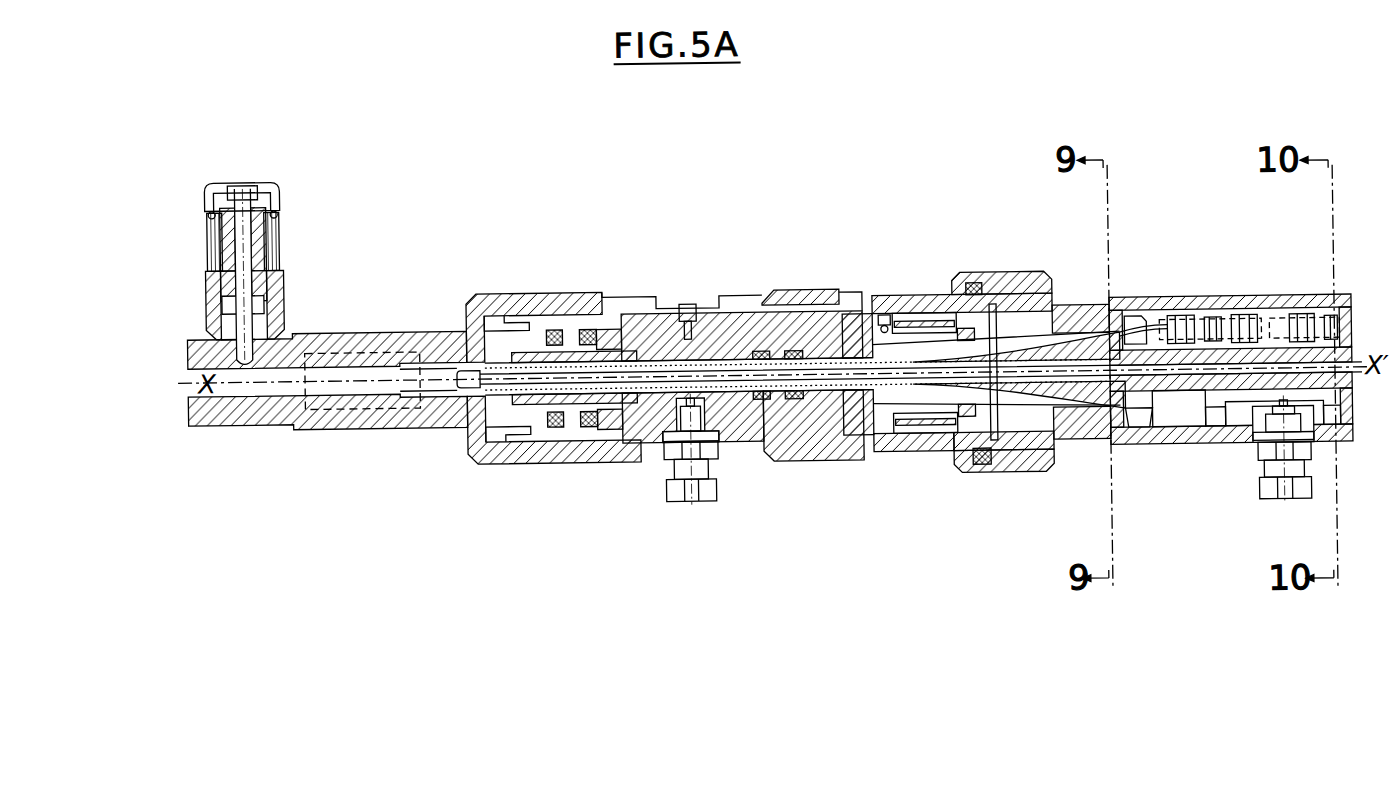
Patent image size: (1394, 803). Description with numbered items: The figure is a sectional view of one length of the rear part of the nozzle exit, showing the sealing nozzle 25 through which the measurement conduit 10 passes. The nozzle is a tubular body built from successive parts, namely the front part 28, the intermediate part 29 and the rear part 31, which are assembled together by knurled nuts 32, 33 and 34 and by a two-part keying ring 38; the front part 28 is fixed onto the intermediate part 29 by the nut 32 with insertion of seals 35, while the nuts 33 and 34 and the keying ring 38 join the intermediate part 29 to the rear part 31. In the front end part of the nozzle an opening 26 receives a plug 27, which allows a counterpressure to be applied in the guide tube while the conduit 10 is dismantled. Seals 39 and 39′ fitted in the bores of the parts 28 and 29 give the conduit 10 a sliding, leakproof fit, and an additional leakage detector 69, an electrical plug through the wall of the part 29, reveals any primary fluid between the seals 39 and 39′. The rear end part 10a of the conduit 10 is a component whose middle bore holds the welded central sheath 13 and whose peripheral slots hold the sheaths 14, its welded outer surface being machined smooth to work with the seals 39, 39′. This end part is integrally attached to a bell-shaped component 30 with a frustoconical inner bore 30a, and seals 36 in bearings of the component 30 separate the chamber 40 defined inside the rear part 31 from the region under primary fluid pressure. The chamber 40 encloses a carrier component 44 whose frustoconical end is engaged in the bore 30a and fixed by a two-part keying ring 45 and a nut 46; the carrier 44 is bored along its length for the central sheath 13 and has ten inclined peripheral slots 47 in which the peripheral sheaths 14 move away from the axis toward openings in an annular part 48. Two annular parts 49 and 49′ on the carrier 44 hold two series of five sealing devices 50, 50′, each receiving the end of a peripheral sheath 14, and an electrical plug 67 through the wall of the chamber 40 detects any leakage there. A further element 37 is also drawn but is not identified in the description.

The measurement conduit 10 is at (665, 358).
The rear end part of the measurement conduit 10a is at (660, 370).
The central sheath 13 is at (1115, 340).
The peripheral sheath 14 is at (925, 345).
The sealing nozzle 25 is at (864, 296).
The opening 26 is at (284, 294).
The plug 27 is at (282, 206).
The front part of the nozzle 28 is at (445, 340).
The intermediate part of the nozzle 29 is at (753, 441).
The bell-shaped component 30 is at (937, 440).
The frustoconical inner bore 30a is at (897, 453).
The rear part of the nozzle 31 is at (1195, 447).
The knurled nut 32 is at (510, 296).
The knurled nut 33 is at (800, 296).
The knurled nut 34 is at (1040, 474).
The seals 35 is at (590, 421).
The seals 36 is at (833, 465).
The plate 37 is at (1000, 455).
The keying ring in two parts 38 is at (985, 467).
The seal 39 is at (755, 352).
The seal 39′ is at (552, 421).
The chamber 40 is at (1318, 418).
The carrier component 44 is at (1127, 397).
The keying ring in two parts 45 is at (962, 336).
The nut 46 is at (888, 323).
The peripheral slots 47 is at (912, 396).
The annular part of the carrier 48 is at (1140, 430).
The annular part 49 is at (1215, 425).
The annular part 49′ is at (1333, 424).
The sealing devices 50 is at (1183, 322).
The sealing devices 50′ is at (1303, 322).
The electrical plug 67 is at (1281, 505).
The additional leakage detector 69 is at (735, 488).